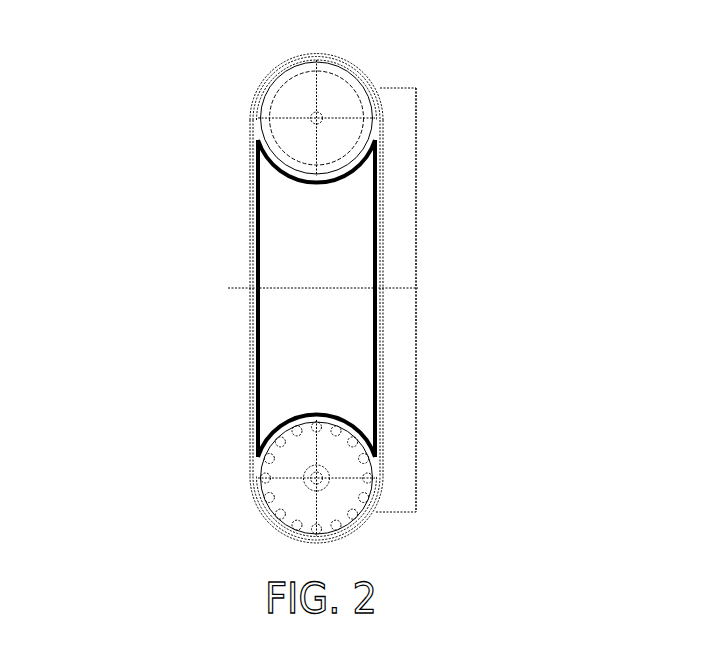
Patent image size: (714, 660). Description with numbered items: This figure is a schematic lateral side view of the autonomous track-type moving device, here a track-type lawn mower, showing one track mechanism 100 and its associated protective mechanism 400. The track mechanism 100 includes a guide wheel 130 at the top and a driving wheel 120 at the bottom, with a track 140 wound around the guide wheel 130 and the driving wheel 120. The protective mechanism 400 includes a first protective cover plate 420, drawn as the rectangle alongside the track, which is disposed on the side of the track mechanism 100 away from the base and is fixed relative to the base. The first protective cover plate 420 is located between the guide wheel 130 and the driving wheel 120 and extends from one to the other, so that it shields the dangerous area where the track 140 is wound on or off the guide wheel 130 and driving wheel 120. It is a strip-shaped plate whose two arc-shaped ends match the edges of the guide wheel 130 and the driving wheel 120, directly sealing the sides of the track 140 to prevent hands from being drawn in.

The track mechanism 100 is at (147, 293).
The driving wheel 120 is at (245, 463).
The guide wheel 130 is at (259, 138).
The track 140 is at (250, 328).
The protective mechanism 400 is at (480, 302).
The first protective cover plate 420 is at (378, 300).